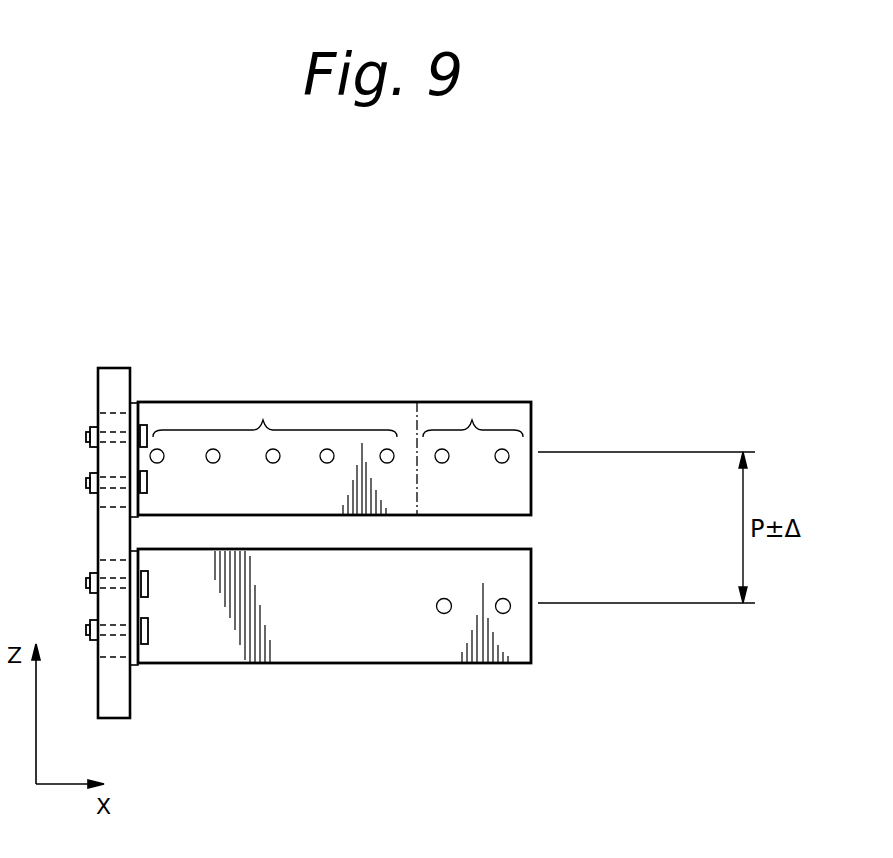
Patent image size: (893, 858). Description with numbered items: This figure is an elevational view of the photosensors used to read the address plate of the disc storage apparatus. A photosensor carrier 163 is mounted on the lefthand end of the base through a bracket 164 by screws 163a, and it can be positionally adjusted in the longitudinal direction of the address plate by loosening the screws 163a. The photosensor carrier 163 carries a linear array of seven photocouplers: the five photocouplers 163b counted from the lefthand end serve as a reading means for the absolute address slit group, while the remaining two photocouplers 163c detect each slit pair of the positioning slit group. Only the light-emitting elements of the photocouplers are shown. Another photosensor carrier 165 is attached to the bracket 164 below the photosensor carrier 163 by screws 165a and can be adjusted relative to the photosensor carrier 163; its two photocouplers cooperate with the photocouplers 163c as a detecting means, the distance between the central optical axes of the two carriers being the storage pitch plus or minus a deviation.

The photosensor carrier 163 is at (539, 444).
The screws 163a is at (140, 427).
The photocouplers 163b is at (265, 418).
The photocouplers 163c is at (473, 418).
The bracket 164 is at (122, 698).
The photosensor carrier 165 is at (537, 587).
The screws 165a is at (150, 586).